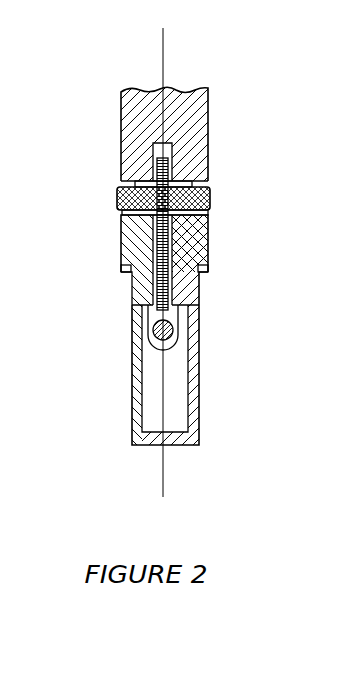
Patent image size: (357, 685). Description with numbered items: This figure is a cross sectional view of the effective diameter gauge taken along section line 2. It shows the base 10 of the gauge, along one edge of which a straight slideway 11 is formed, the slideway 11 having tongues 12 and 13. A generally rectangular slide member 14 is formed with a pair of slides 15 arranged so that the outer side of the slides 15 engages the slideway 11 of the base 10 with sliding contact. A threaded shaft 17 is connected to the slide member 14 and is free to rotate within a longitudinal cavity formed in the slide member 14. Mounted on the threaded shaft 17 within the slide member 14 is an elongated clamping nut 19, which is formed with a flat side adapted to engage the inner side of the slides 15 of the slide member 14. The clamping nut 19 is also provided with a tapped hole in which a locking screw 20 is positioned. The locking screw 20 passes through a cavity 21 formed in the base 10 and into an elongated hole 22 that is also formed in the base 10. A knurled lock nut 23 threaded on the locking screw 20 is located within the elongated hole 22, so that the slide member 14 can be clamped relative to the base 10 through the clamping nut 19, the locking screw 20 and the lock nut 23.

The section line 2 is at (164, 261).
The base 10 is at (208, 140).
The slideway 11 is at (209, 270).
The tongue 12 is at (125, 275).
The tongue 13 is at (203, 278).
The slide member 14 is at (199, 365).
The slides 15 is at (126, 270).
The threaded shaft 17 is at (160, 333).
The clamping nut 19 is at (154, 346).
The locking screw 20 is at (154, 256).
The cavity 21 is at (152, 252).
The elongated hole 22 is at (122, 182).
The knurled lock nut 23 is at (211, 192).